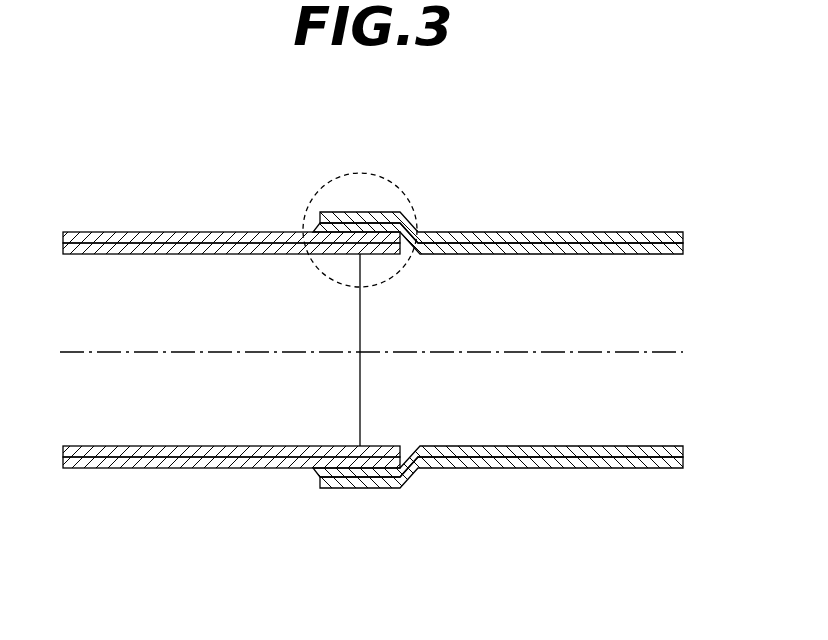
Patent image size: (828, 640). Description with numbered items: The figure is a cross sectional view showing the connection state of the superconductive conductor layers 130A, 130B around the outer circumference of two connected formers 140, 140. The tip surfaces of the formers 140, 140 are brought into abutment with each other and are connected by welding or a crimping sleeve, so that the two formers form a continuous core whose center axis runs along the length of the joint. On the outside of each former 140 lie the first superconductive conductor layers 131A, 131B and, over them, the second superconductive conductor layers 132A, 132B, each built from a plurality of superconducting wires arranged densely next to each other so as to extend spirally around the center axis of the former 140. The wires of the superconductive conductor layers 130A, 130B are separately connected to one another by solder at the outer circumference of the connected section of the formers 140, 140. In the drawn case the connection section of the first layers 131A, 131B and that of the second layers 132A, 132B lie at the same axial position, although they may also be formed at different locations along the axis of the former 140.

The superconductive conductor layer 130A is at (222, 289).
The first superconductive conductor layer 131A is at (193, 154).
The second superconductive conductor layer 132A is at (183, 237).
The superconductive conductor layer 130B is at (498, 299).
The first superconductive conductor layer 131B is at (683, 154).
The second superconductive conductor layer 132B is at (618, 238).
The former 140 is at (240, 437).